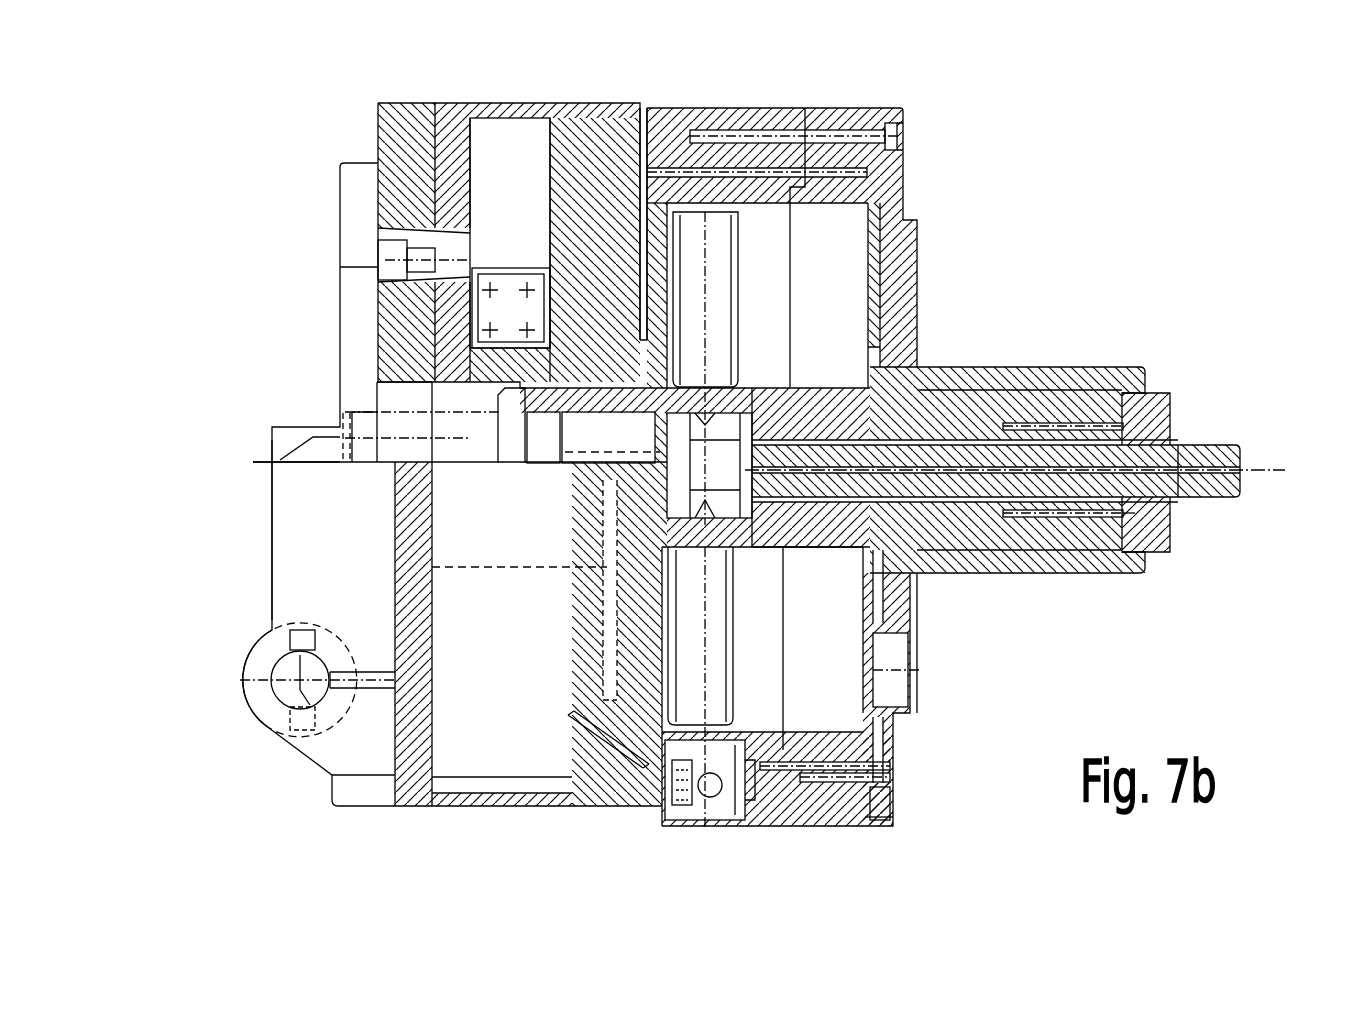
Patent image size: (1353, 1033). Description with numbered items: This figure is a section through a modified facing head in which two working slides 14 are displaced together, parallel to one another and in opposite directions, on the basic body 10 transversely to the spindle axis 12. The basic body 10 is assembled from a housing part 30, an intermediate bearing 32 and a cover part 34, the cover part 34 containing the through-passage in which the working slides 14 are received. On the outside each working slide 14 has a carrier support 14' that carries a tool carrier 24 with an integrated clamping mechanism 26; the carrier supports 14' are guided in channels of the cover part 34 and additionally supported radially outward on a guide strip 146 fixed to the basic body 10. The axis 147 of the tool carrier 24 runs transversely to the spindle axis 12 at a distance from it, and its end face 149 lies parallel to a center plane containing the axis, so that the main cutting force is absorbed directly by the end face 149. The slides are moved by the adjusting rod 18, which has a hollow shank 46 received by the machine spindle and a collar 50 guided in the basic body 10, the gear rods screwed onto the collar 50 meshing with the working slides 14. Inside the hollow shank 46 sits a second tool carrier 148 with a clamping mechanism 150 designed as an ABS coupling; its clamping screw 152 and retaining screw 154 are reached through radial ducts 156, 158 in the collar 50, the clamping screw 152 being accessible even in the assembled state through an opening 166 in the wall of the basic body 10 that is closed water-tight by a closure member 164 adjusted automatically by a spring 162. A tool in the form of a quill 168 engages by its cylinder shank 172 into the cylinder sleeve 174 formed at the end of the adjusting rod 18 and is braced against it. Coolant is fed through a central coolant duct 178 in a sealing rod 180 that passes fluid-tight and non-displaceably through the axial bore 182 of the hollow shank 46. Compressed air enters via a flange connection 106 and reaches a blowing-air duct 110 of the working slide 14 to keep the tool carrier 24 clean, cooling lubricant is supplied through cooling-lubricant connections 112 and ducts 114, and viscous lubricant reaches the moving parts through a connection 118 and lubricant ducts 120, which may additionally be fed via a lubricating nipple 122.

The basic body 10 is at (742, 116).
The basic-body axis 12 is at (458, 464).
The working slide 14 is at (455, 525).
The carrier support 14' is at (318, 530).
The adjusting rod 18 is at (924, 414).
The tool carrier 24 is at (272, 645).
The clamping mechanism 26 is at (290, 697).
The housing part 30 is at (858, 138).
The intermediate bearing 32 is at (684, 128).
The cover part 34 is at (406, 152).
The hollow shank 46 is at (992, 425).
The collar 50 is at (735, 570).
The flange connection 106 is at (1130, 513).
The blowing-air duct 110 is at (899, 777).
The cooling-lubricant connection 112 is at (912, 134).
The cooling-lubricant duct 114 is at (797, 130).
The connection 118 is at (844, 795).
The lubricant duct 120 is at (645, 125).
The lubricating nipple 122 is at (893, 805).
The guide strip 146 is at (275, 570).
The axis of the tool carrier 147 is at (285, 700).
The tool carrier 148 is at (545, 462).
The end face 149 is at (295, 676).
The clamping mechanism 150 is at (652, 430).
The clamping screw 152 is at (625, 567).
The retaining screw 154 is at (745, 398).
The radial duct 156 is at (676, 656).
The radial duct 158 is at (738, 287).
The spring 162 is at (668, 846).
The closure member 164 is at (727, 805).
The opening 166 is at (704, 800).
The quill 168 is at (316, 440).
The cylinder shank 172 is at (612, 453).
The cylinder sleeve 174 is at (540, 410).
The central coolant duct 178 is at (1215, 460).
The sealing rod 180 is at (1175, 382).
The axial bore 182 is at (1052, 437).